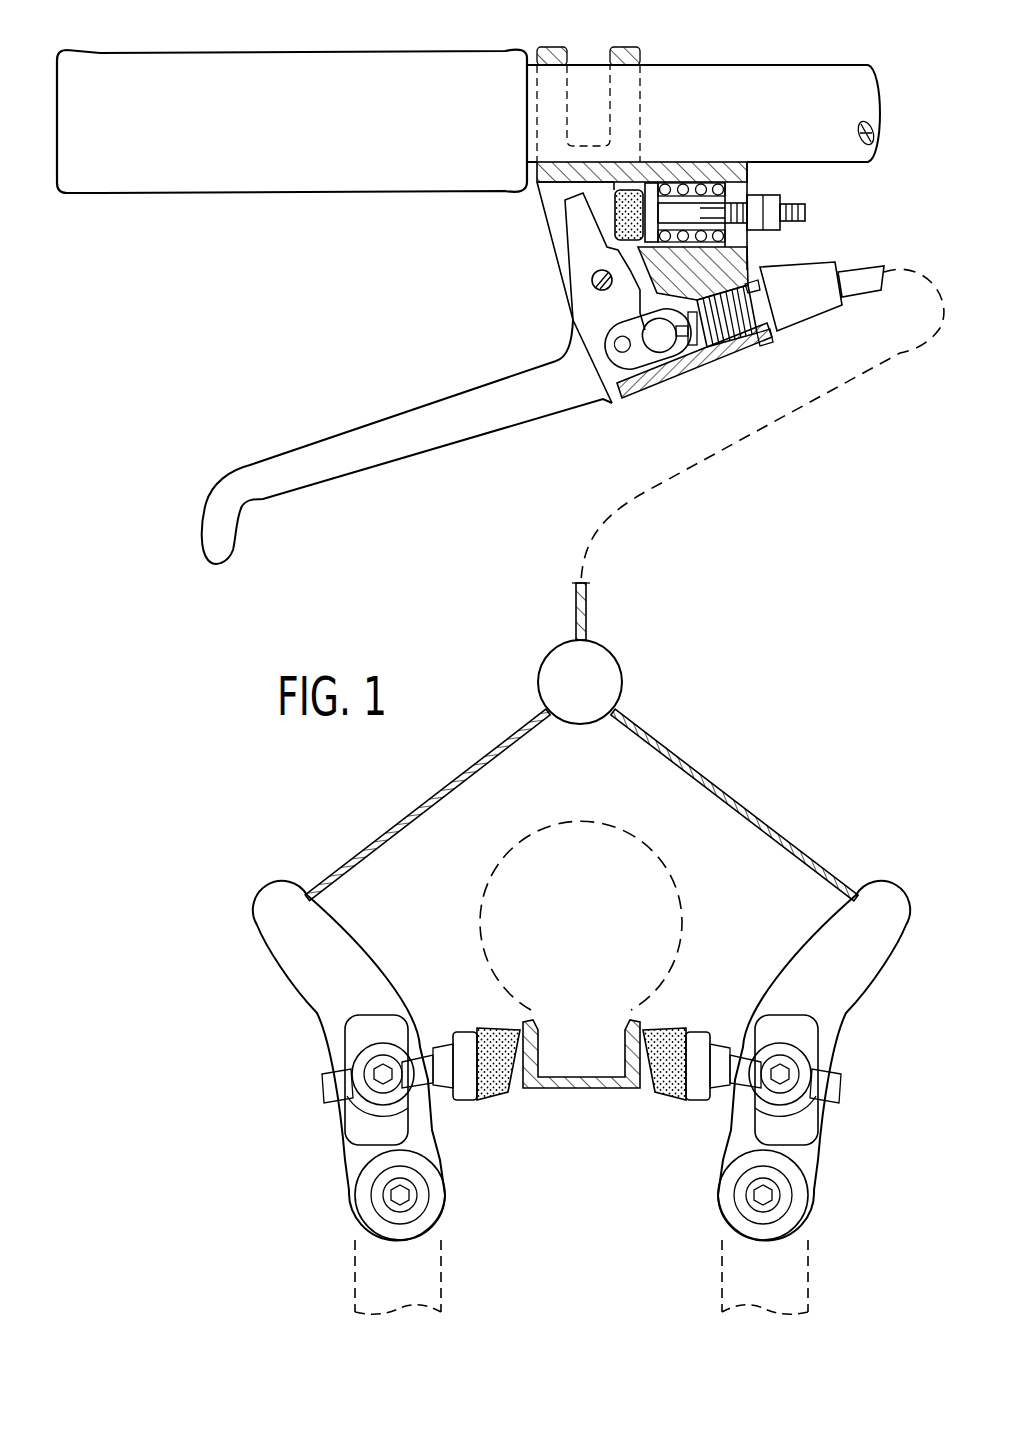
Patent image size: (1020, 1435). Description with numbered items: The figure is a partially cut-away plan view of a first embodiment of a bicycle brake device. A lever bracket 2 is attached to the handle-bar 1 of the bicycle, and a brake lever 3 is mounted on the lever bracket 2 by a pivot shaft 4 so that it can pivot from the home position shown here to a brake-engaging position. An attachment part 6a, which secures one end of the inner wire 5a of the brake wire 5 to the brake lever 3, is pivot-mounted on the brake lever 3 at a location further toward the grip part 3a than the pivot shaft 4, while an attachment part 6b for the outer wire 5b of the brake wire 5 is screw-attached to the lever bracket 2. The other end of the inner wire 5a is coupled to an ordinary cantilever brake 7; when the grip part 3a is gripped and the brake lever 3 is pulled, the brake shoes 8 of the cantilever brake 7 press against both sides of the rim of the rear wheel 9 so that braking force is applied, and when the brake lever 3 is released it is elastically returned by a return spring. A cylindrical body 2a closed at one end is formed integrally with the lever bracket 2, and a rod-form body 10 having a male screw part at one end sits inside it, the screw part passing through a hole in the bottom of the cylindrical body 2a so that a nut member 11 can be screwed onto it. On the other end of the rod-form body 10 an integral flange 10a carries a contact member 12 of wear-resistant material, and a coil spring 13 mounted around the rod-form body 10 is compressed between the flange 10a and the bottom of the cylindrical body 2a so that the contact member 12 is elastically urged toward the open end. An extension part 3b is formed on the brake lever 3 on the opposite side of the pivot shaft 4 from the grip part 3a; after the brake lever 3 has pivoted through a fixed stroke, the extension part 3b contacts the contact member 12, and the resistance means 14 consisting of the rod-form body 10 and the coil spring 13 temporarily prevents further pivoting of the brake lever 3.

The handle-bar 1 is at (722, 72).
The lever bracket 2 is at (630, 400).
The cylindrical body 2a is at (733, 172).
The brake lever 3 is at (423, 378).
The grip part 3a is at (347, 470).
The extension part 3b is at (577, 210).
The pivot shaft 4 is at (594, 278).
The brake wire 5 is at (870, 305).
The inner wire 5a is at (587, 596).
The outer wire 5b is at (872, 262).
The attachment part 6a is at (690, 362).
The attachment part 6b is at (813, 310).
The cantilever brake 7 is at (791, 772).
The brake shoes 8 is at (512, 1082).
The rear wheel 9 is at (598, 822).
The rod-form body 10 is at (806, 213).
The flange 10a is at (650, 184).
The nut member 11 is at (756, 196).
The contact member 12 is at (627, 218).
The coil spring 13 is at (700, 186).
The resistance means 14 is at (605, 185).